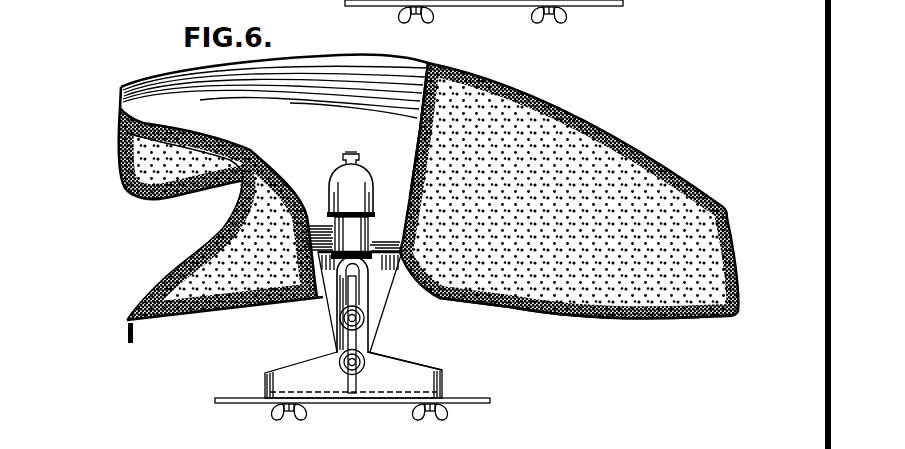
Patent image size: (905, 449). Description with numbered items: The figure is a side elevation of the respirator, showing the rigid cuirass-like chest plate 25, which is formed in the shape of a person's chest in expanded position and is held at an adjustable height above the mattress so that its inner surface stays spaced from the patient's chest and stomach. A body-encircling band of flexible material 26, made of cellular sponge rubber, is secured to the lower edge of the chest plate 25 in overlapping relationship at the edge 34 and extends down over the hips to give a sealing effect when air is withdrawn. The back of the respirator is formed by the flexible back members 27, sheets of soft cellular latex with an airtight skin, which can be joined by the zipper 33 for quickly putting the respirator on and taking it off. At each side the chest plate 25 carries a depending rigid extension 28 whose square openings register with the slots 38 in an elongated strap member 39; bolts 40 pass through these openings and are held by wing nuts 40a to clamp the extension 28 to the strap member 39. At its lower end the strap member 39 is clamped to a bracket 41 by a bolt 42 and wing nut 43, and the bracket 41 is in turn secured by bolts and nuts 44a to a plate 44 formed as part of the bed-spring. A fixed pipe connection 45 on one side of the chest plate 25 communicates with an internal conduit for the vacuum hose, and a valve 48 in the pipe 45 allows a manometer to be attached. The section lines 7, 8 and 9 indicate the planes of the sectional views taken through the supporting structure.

The section line 7- 7 is at (72, 58).
The section line 8- 8 is at (167, 395).
The section line 9- 9 is at (352, 283).
The chest plate 25 is at (340, 64).
The flexible band 26 is at (656, 168).
The back members 27 is at (491, 305).
The rigid extensions 28 is at (325, 296).
The zipper 33 is at (126, 326).
The overlapping edge 34 is at (429, 63).
The slots 38 is at (360, 292).
The strap members 39 is at (369, 340).
The bolts 40 is at (341, 318).
The wing nuts 40a is at (364, 302).
The brackets 41 is at (307, 367).
The bolts 42 is at (342, 364).
The wing nuts 43 is at (365, 363).
The plates 44 is at (228, 403).
The bolts and nuts 44a is at (277, 416).
The pipe connection 45 is at (374, 198).
The valve 48 is at (357, 158).